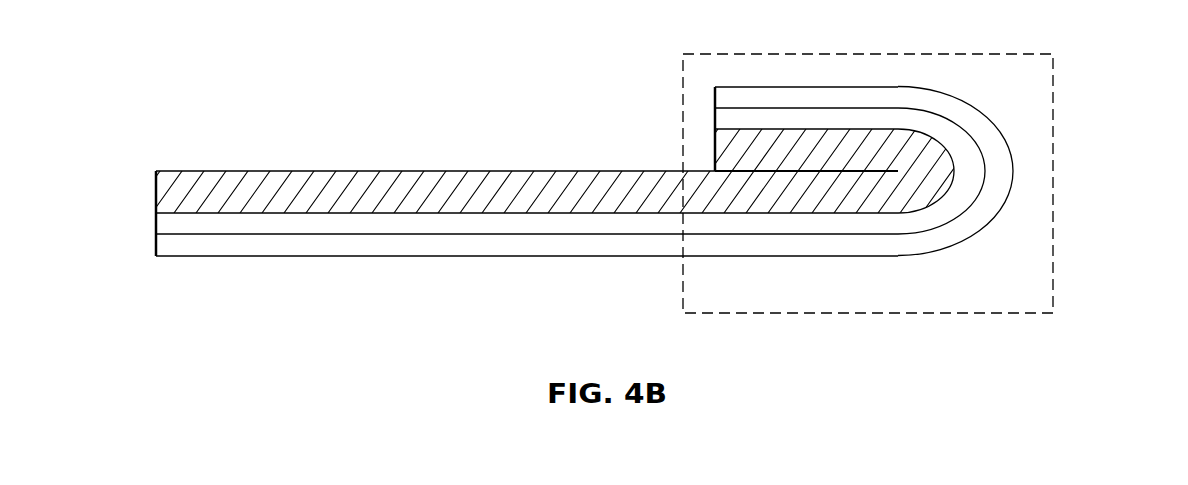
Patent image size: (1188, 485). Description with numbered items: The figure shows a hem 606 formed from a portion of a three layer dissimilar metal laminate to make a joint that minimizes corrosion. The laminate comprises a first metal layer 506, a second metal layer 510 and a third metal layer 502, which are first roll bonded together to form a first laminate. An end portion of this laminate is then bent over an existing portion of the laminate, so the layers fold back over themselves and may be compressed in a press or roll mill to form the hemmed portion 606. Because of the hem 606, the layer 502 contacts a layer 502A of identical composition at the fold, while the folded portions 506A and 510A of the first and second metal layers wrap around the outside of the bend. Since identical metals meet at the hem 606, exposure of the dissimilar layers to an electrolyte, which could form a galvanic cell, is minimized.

The third metal layer 502 is at (180, 192).
The first metal layer 506 is at (182, 227).
The second metal layer 510 is at (213, 247).
The layer of identical composition 502A is at (727, 151).
The folded portion of first metal layer 506A is at (727, 117).
The folded portion of second metal layer 510A is at (963, 117).
The hem 606 is at (1053, 189).